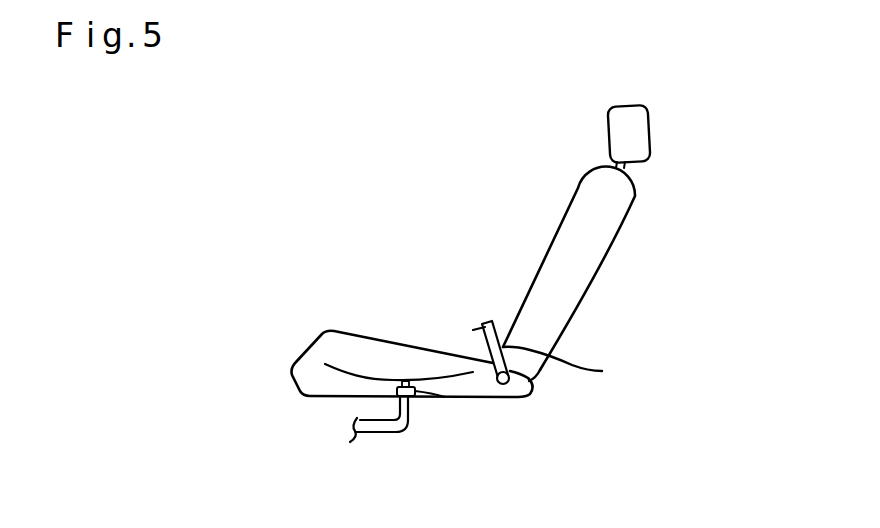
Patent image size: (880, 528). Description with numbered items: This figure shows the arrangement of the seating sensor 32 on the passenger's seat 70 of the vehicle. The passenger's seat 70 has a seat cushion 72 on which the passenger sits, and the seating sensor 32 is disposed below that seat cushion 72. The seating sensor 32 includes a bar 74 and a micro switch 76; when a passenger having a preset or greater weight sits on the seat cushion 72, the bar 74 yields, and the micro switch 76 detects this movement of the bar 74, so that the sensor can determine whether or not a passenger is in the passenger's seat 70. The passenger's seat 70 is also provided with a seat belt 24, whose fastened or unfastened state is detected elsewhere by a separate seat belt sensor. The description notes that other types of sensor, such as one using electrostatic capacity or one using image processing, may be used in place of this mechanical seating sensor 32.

The passenger's seat 70 is at (622, 272).
The seat cushion 72 is at (392, 345).
The bar 74 is at (348, 371).
The micro switch 76 is at (420, 390).
The seating sensor 32 is at (418, 417).
The seat belt 24 is at (571, 370).